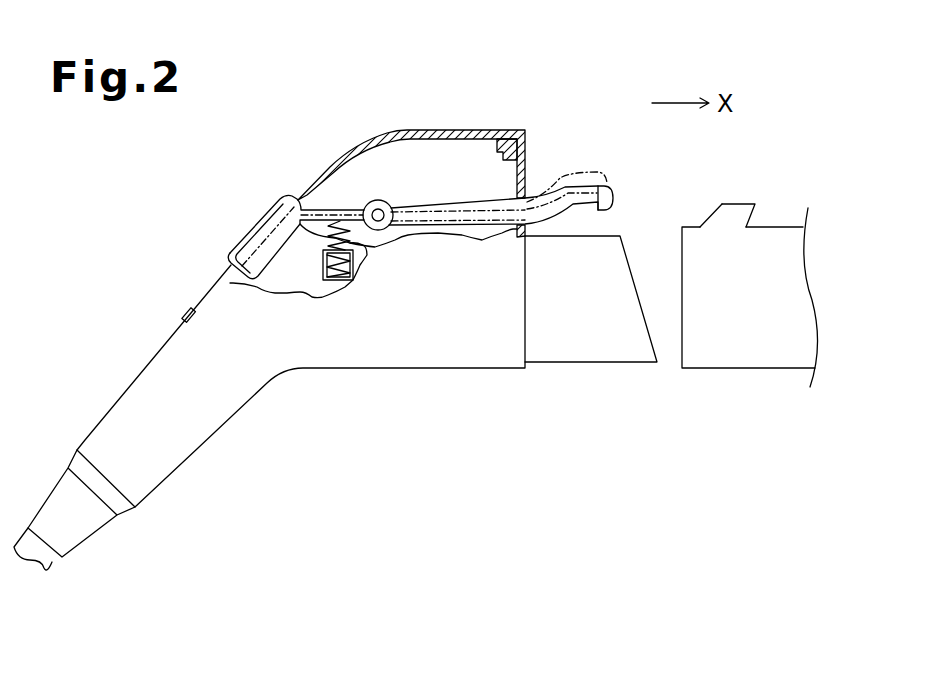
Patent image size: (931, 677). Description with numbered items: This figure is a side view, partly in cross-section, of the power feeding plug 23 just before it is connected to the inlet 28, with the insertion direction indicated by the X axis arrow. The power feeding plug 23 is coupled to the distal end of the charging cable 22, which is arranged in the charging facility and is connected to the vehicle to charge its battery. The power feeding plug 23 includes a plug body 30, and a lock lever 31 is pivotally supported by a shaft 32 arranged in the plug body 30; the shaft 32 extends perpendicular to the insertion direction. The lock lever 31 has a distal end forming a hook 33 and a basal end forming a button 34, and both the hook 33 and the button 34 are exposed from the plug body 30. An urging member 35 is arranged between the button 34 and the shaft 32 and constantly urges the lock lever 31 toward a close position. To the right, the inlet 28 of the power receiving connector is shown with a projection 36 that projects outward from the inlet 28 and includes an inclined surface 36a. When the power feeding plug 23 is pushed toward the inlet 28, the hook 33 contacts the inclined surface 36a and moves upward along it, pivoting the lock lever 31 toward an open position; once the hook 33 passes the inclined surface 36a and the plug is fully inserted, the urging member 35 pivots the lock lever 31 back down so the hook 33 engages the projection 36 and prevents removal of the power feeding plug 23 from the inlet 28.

The charging cable 22 is at (52, 565).
The power feeding plug 23 is at (462, 370).
The inlet 28 is at (748, 356).
The plug body 30 is at (370, 357).
The lock lever 31 is at (467, 205).
The shaft 32 is at (380, 212).
The hook 33 is at (614, 200).
The button 34 is at (252, 222).
The urging member 35 is at (367, 258).
The projection 36 is at (748, 210).
The inclined surface 36a is at (710, 212).